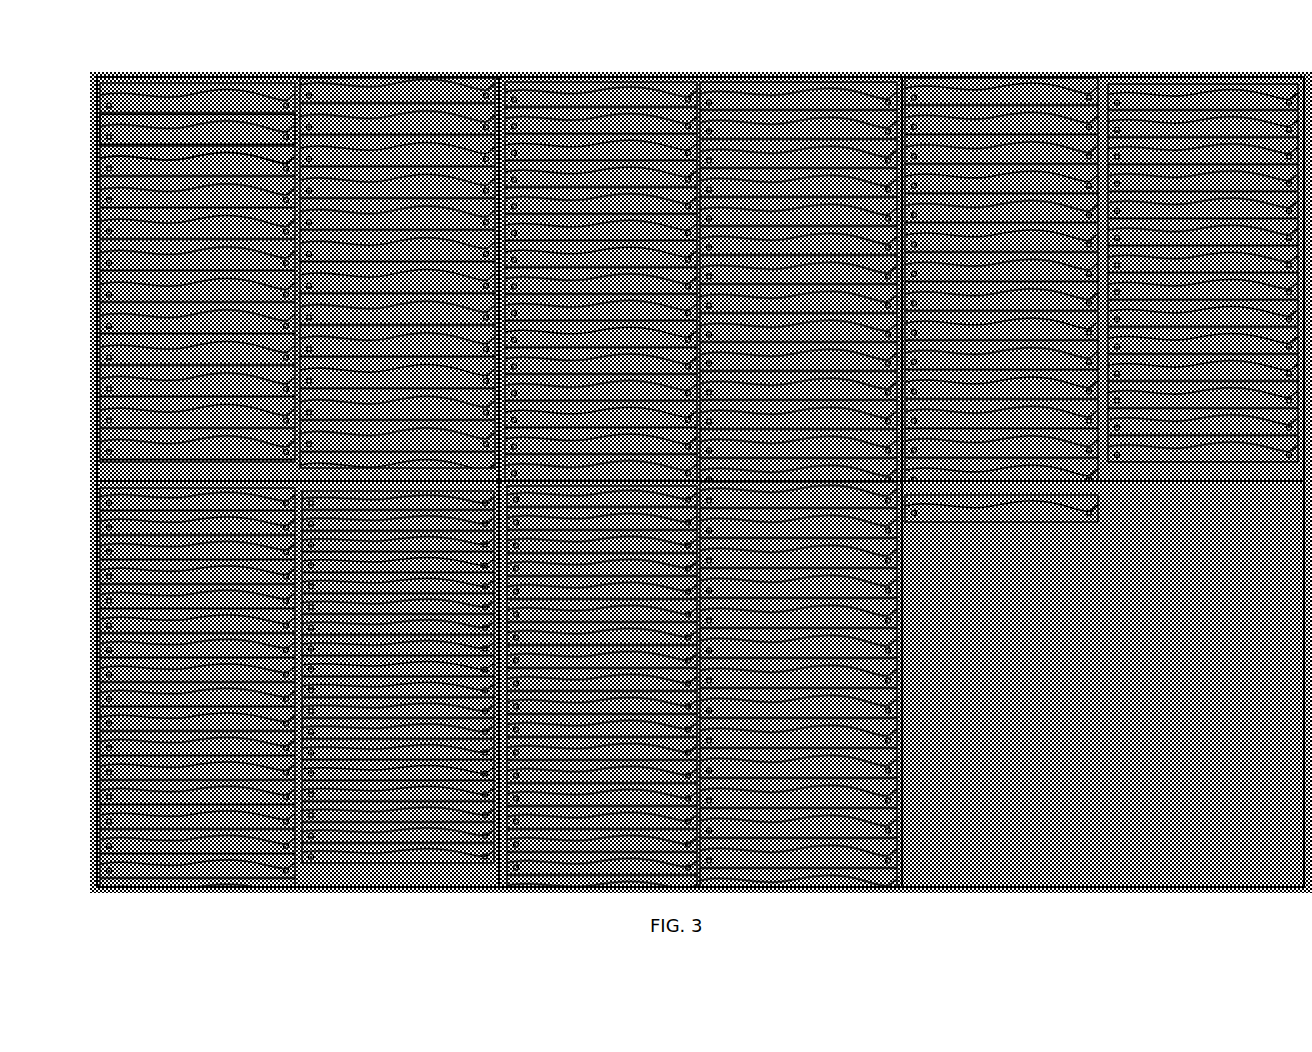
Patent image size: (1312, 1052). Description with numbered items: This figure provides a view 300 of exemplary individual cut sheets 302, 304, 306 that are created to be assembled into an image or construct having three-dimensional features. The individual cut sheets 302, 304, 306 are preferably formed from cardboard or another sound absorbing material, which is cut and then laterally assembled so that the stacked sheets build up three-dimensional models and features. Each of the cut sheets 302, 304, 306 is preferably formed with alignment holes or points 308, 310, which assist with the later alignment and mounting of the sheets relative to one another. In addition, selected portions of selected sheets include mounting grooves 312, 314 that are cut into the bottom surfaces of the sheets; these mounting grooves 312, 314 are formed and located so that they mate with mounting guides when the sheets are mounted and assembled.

The view 300 is at (890, 28).
The cut sheet 302 is at (148, 100).
The cut sheet 304 is at (210, 130).
The cut sheet 306 is at (245, 165).
The alignment hole 308 is at (510, 100).
The alignment hole 310 is at (682, 100).
The mounting groove 312 is at (1155, 105).
The mounting groove 314 is at (1250, 105).